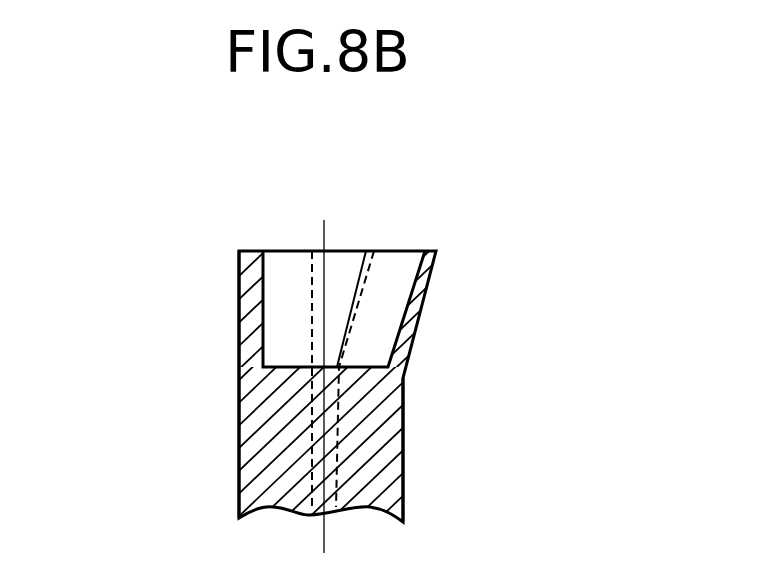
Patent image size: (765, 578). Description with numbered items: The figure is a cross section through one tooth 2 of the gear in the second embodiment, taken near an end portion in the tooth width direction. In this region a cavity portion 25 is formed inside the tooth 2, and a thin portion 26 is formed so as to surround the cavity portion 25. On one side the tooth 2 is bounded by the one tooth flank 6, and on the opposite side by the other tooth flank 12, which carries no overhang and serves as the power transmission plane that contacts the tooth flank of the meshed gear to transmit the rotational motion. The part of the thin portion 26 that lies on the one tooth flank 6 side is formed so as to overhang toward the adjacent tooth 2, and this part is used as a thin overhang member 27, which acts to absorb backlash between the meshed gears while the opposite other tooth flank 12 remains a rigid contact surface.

The tooth 2 is at (431, 444).
The one tooth flank 6 is at (401, 503).
The other tooth flank 12 is at (239, 452).
The cavity portion 25 is at (288, 268).
The thin portion 26 is at (253, 252).
The thin overhang member 27 is at (426, 252).